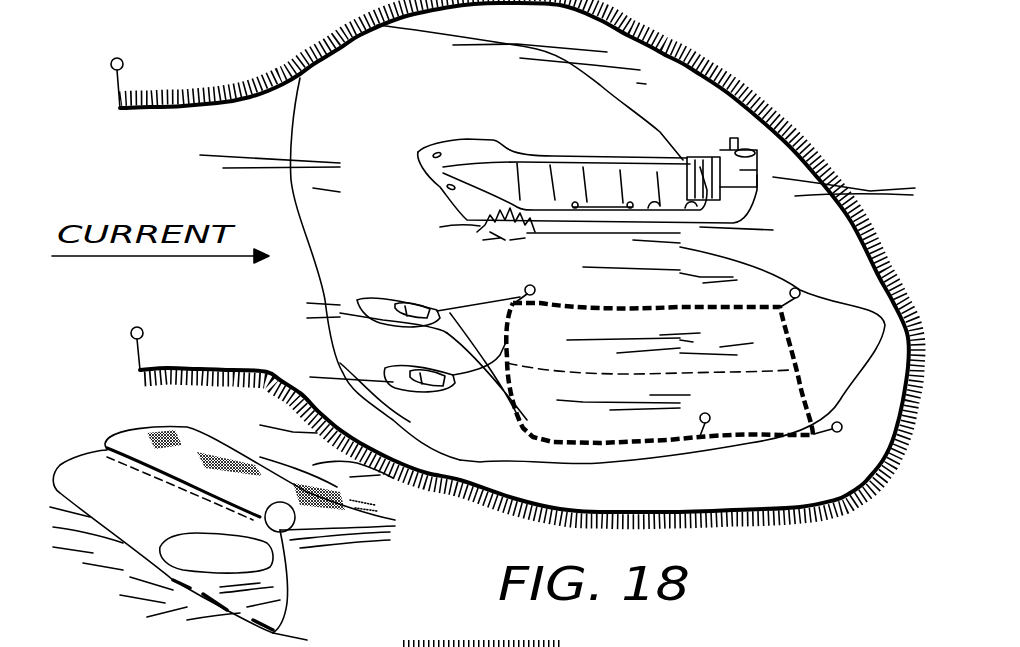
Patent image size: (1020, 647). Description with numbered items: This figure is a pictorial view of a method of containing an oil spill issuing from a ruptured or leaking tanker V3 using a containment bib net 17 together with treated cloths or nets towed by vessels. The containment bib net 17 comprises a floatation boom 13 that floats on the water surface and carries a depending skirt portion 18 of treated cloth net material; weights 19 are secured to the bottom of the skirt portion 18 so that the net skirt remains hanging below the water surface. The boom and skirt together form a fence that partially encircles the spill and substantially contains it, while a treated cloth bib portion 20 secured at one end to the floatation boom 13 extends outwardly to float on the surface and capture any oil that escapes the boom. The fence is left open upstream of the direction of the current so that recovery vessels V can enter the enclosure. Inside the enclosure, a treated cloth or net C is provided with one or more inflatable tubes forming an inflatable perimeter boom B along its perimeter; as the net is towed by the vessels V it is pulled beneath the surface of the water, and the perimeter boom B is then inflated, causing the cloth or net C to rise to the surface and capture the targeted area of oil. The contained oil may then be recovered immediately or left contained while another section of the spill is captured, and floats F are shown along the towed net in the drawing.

The floatation boom 13 is at (120, 440).
The containment bib net 17 is at (764, 77).
The skirt portion 18 is at (280, 598).
The weights 19 is at (280, 632).
The treated cloth bib portion 20 is at (192, 448).
The tanker V3 is at (505, 175).
The recovery vessels V is at (383, 310).
The inflatable perimeter boom B is at (567, 307).
The float F is at (527, 286).
The treated cloth or net C is at (755, 347).